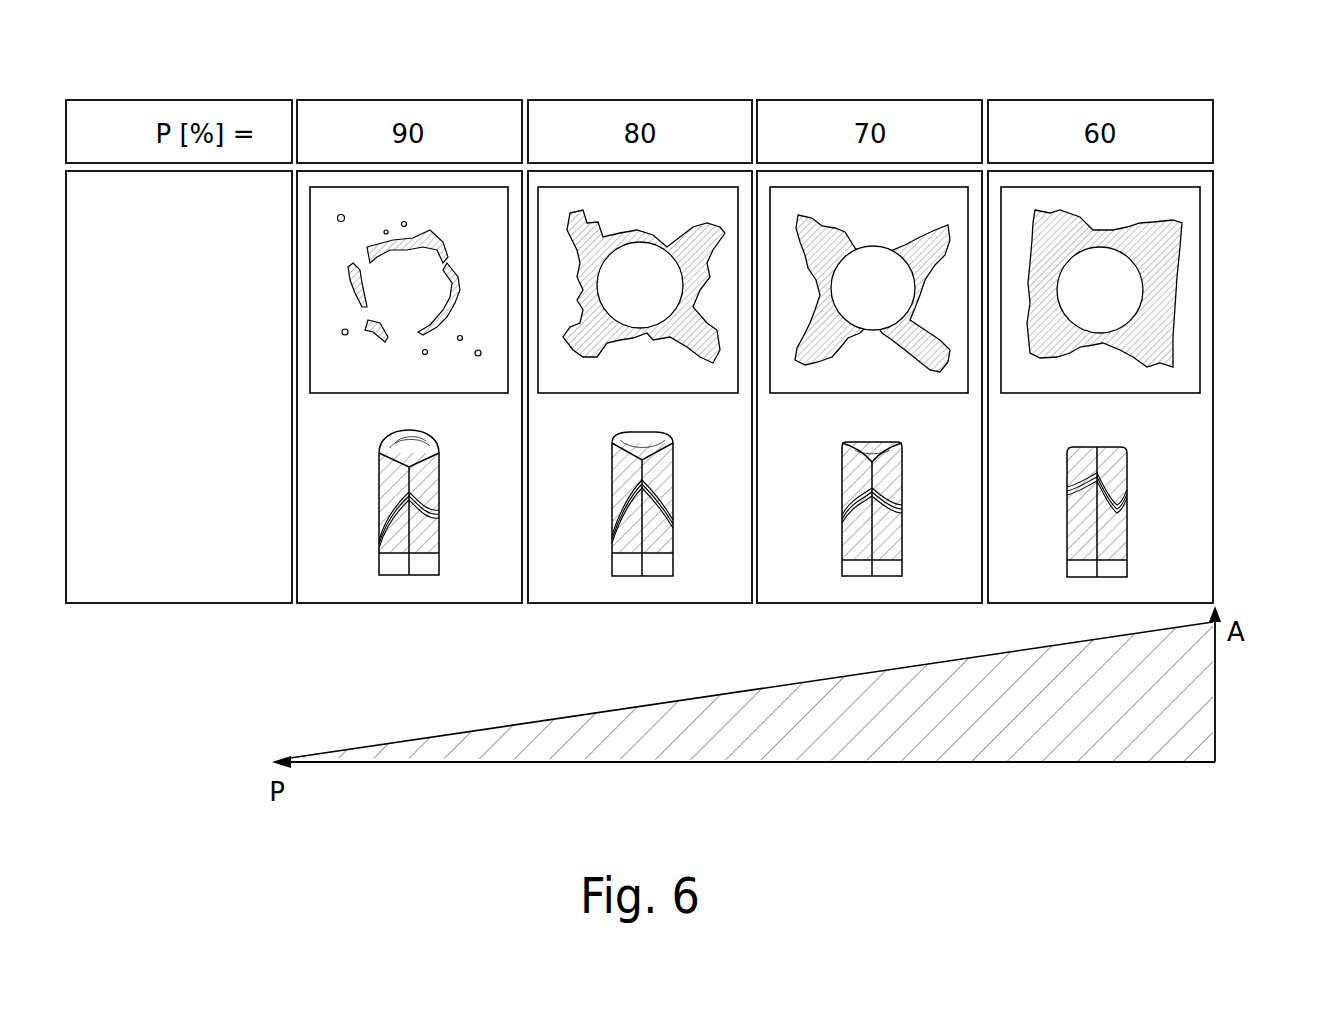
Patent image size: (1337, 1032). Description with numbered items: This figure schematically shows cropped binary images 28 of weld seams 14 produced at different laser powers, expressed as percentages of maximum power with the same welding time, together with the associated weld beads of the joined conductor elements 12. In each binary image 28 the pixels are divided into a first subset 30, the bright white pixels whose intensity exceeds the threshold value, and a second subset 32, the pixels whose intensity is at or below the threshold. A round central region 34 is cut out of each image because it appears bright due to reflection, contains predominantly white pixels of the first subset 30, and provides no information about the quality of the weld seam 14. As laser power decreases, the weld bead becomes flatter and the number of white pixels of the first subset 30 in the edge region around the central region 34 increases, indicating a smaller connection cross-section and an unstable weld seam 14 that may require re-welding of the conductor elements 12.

The conductor elements 12 is at (392, 537).
The weld seam 14 is at (390, 442).
The cropped binary image 28 is at (443, 395).
The first subset 30 is at (570, 212).
The second subset 32 is at (761, 197).
The central region 34 is at (392, 298).